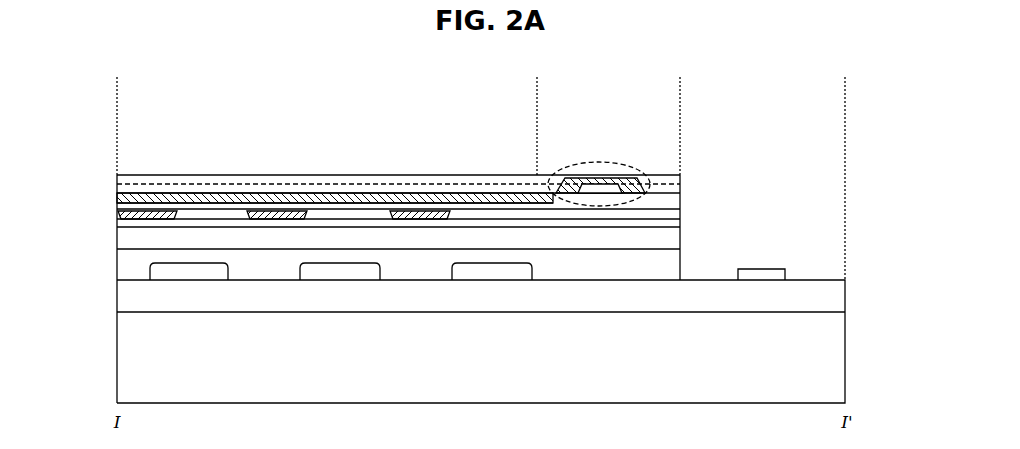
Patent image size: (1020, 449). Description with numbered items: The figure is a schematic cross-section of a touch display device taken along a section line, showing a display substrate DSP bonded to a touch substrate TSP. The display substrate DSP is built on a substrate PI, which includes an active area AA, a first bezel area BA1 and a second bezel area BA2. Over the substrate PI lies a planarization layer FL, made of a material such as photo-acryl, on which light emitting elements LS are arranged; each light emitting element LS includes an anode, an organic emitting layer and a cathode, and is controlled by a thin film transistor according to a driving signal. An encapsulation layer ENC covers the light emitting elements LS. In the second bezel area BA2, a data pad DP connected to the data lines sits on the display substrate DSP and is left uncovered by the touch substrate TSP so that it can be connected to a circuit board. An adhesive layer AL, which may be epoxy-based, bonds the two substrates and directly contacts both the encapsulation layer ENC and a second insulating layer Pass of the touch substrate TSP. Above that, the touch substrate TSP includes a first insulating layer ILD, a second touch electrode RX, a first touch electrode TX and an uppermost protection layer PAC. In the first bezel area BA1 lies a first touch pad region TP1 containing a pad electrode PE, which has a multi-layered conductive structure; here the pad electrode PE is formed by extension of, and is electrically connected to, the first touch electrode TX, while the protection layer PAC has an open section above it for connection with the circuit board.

The active area AA is at (117, 95).
The first bezel area BA1 is at (537, 95).
The second bezel area BA2 is at (845, 95).
The touch substrate TSP is at (680, 175).
The display substrate DSP is at (680, 249).
The protection layer PAC is at (387, 184).
The first touch electrode TX is at (117, 200).
The second touch electrode RX is at (117, 215).
The pad electrode PE is at (597, 176).
The first touch pad region TP1 is at (632, 165).
The first insulating layer ILD is at (681, 203).
The second insulating layer Pass is at (681, 218).
The adhesive layer AL is at (130, 237).
The encapsulation layer ENC is at (130, 262).
The data pad DP is at (786, 276).
The light emitting element LS is at (117, 281).
The planarization layer FL is at (840, 298).
The substrate PI is at (840, 358).